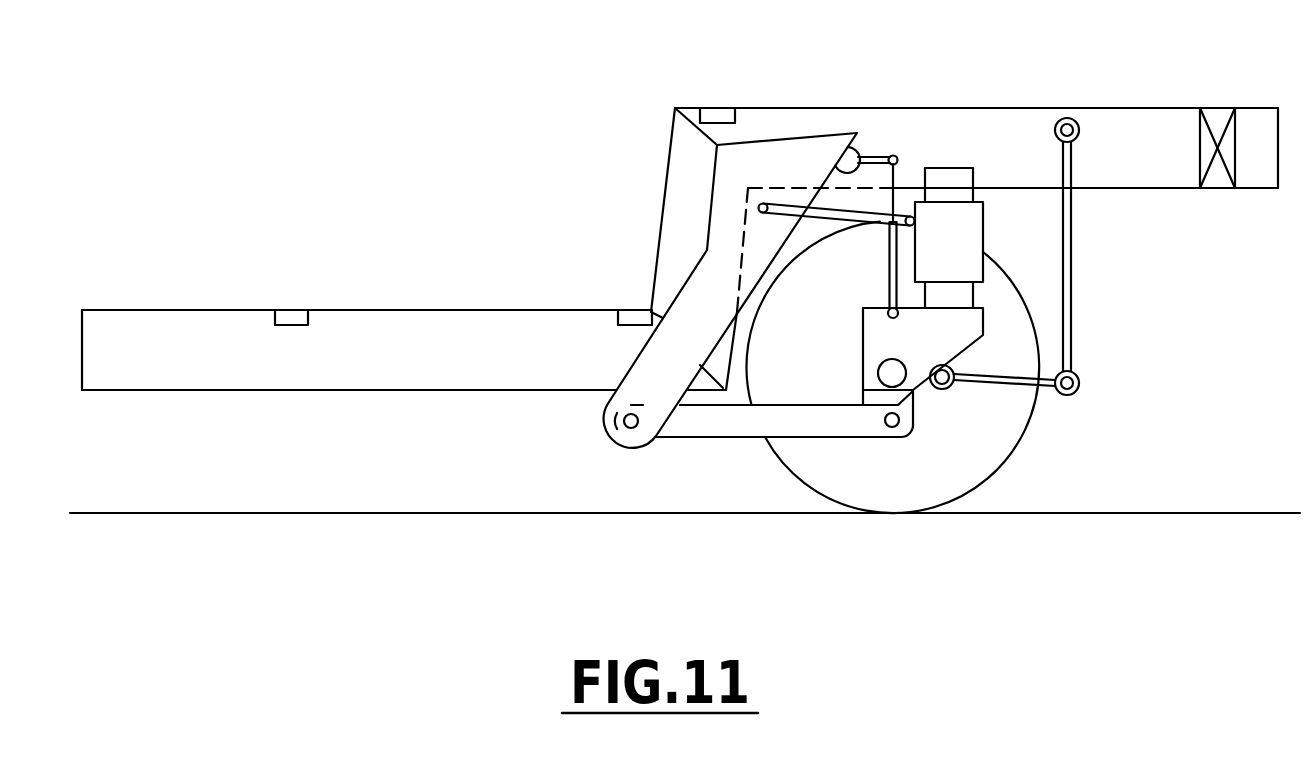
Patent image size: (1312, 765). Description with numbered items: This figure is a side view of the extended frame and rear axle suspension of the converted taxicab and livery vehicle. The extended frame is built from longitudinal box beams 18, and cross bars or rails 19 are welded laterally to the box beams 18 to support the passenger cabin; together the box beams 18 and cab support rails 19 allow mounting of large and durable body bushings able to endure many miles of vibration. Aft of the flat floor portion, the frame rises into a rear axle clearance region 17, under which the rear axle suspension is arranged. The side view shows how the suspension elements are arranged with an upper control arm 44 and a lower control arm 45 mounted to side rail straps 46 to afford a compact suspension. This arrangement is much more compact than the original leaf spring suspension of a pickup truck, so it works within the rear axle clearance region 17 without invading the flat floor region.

The rear axle clearance region 17 is at (1113, 132).
The box beam 18 is at (462, 357).
The cross bar or rail 19 is at (288, 315).
The upper control arm 44 is at (825, 217).
The lower control arm 45 is at (820, 440).
The side rail strap 46 is at (687, 283).